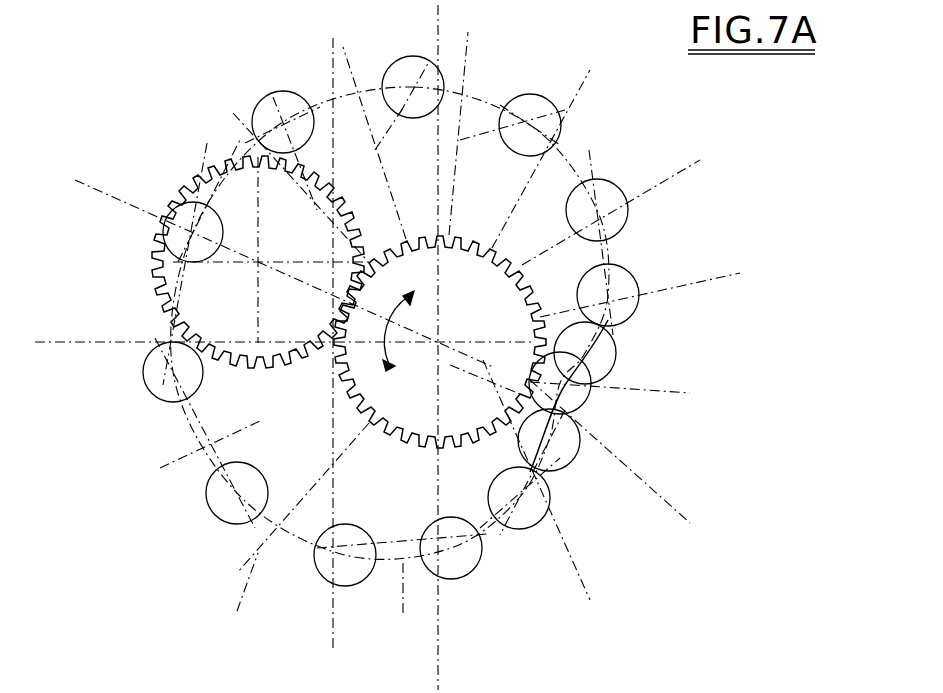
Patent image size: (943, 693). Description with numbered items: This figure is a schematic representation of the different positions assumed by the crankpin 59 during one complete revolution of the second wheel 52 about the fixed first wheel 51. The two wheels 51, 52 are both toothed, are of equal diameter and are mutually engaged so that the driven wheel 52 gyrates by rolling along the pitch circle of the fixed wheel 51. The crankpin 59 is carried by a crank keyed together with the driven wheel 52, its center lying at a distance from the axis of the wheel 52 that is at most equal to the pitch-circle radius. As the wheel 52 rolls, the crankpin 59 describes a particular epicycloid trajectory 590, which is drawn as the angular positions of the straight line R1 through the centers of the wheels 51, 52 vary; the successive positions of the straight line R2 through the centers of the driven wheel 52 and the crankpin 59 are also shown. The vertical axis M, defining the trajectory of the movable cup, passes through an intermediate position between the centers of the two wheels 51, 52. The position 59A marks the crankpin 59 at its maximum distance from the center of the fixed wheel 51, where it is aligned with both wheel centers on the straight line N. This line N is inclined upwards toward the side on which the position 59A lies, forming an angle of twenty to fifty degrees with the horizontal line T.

The fixed first wheel 51 is at (463, 237).
The second wheel 52 is at (158, 288).
The crankpin 59 is at (143, 368).
The crankpin position at maximum distance 59A is at (145, 232).
The epicycloid trajectory 590 is at (176, 430).
The vertical axis of the columns M is at (333, 40).
The straight line through wheel and crankpin centers N is at (115, 197).
The horizontal line T is at (96, 340).
The straight line through the wheel centers R1 is at (598, 114).
The straight line through driven wheel and crankpin centers R2 is at (598, 152).